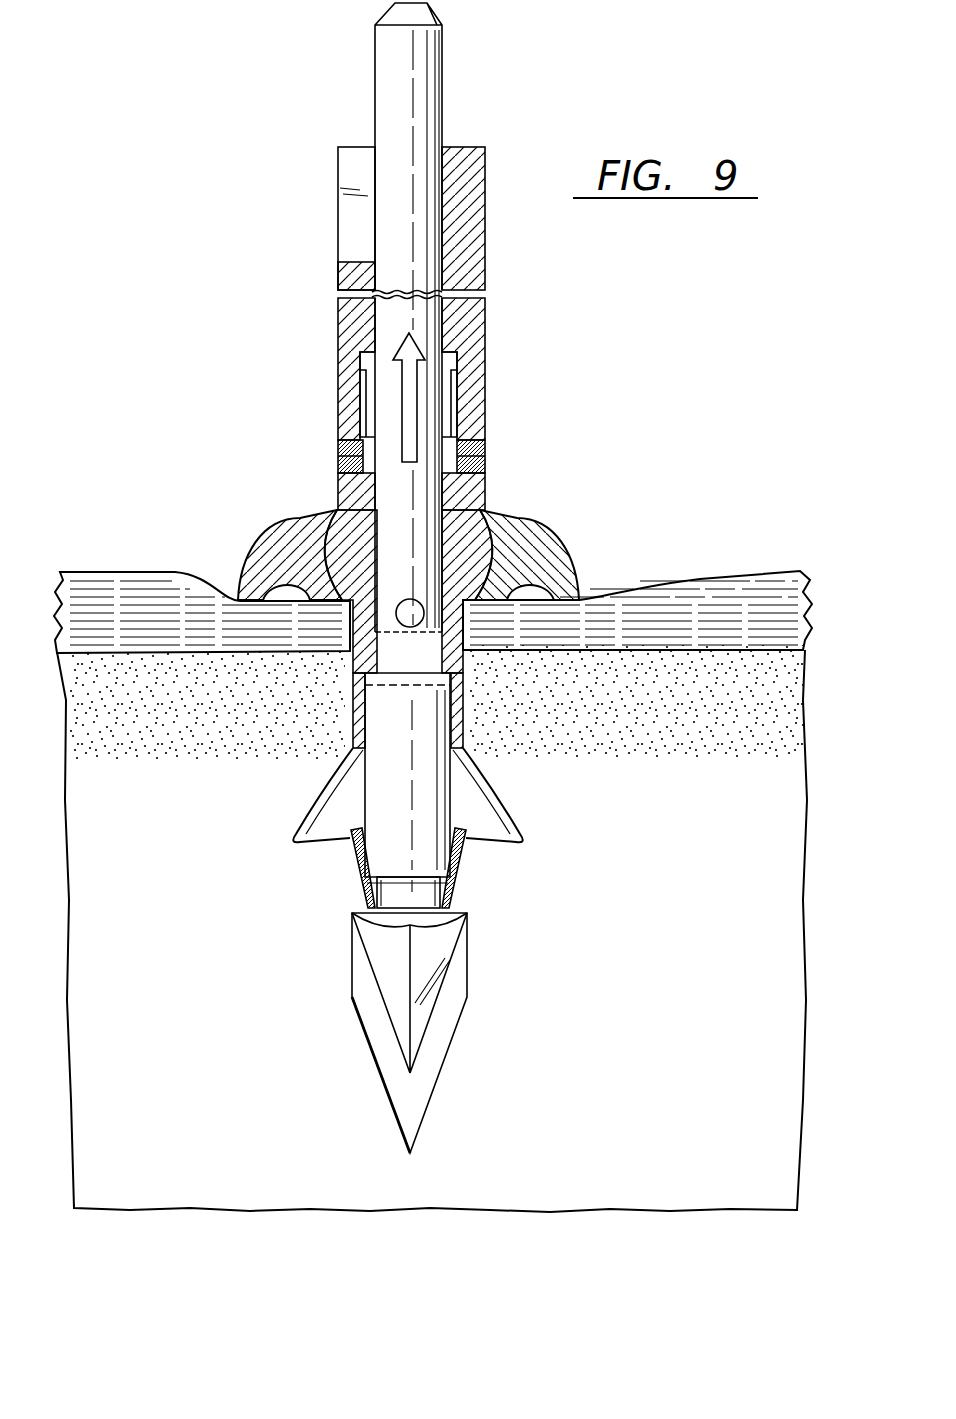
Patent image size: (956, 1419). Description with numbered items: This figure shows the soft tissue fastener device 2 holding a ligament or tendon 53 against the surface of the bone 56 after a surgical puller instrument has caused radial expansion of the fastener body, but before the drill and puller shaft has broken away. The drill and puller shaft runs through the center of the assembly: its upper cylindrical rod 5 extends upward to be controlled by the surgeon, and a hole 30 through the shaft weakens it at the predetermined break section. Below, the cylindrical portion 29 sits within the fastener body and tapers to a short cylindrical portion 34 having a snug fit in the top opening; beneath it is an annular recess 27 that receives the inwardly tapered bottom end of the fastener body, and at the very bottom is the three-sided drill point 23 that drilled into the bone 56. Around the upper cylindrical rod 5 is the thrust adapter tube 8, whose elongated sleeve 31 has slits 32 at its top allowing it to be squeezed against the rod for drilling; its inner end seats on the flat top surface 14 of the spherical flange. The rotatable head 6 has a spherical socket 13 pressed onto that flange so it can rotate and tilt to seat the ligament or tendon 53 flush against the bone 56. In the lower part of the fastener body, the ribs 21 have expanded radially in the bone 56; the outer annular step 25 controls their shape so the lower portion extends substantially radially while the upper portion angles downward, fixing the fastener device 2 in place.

The fastener device 2 is at (563, 509).
The upper cylindrical rod 5 is at (378, 105).
The rotatable head 6 is at (262, 530).
The thrust adapter tube 8 is at (496, 248).
The spherical socket 13 is at (490, 520).
The flat top surface 14 is at (477, 500).
The ribs 21 is at (330, 800).
The drill point 23 is at (427, 1008).
The outer annular step 25 is at (350, 850).
The annular recess 27 is at (400, 900).
The cylindrical portion 29 is at (419, 803).
The hole 30 is at (404, 602).
The elongated sleeve 31 is at (478, 362).
The slits 32 is at (347, 185).
The short cylindrical portion 34 is at (352, 672).
The ligament or tendon 53 is at (678, 600).
The bone 56 is at (775, 835).